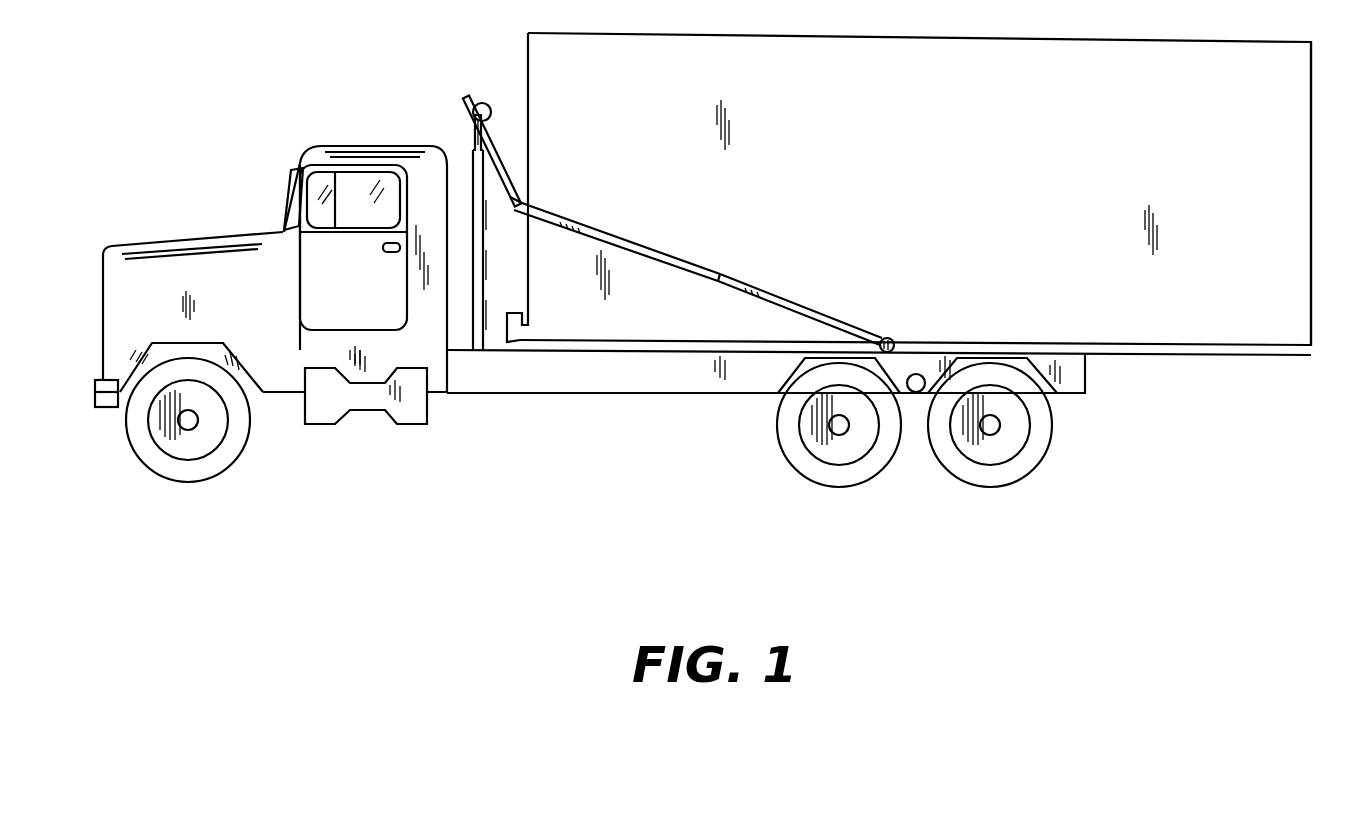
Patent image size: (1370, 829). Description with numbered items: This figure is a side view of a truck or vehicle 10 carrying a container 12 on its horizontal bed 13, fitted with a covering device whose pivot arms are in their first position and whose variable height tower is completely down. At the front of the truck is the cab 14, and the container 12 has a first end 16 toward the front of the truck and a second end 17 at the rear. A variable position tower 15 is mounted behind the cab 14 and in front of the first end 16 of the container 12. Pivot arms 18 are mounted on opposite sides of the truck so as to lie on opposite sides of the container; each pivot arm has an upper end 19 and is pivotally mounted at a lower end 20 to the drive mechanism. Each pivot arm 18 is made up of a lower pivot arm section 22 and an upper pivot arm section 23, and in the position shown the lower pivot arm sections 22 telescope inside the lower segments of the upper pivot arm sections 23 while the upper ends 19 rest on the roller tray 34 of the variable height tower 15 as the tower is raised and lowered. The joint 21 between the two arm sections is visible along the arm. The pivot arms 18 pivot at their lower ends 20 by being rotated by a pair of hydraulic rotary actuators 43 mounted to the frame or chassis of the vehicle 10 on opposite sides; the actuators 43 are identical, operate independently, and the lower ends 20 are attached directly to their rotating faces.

The truck 10 is at (508, 375).
The container 12 is at (905, 148).
The horizontal bed 13 is at (620, 375).
The cab 14 is at (342, 300).
The variable position tower 15 is at (485, 295).
The first end 16 is at (530, 133).
The second end 17 is at (1309, 142).
The pivot arms 18 is at (696, 267).
The upper end 19 is at (468, 95).
The lower end 20 is at (883, 336).
The arm joint 21 is at (722, 275).
The lower pivot arm section 22 is at (770, 300).
The upper pivot arm section 23 is at (593, 223).
The roller tray 34 is at (465, 122).
The hydraulic rotary actuators 43 is at (896, 340).